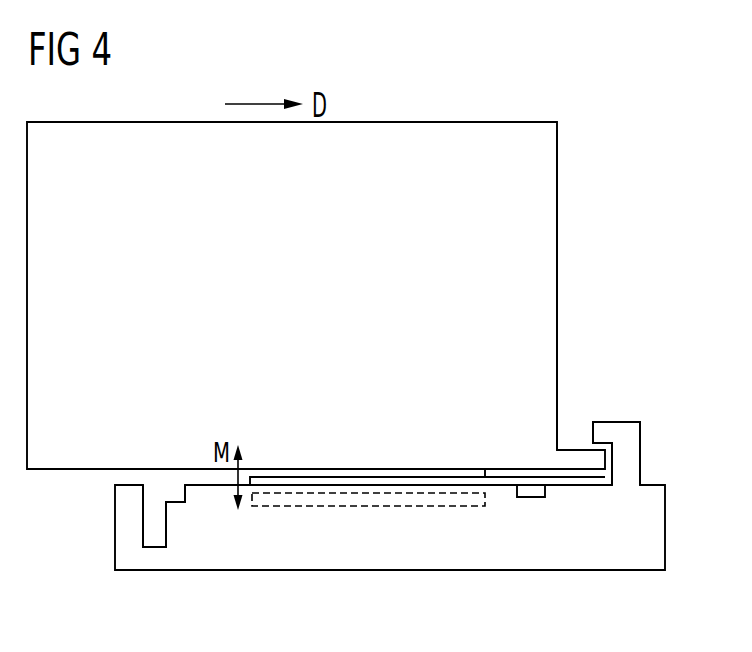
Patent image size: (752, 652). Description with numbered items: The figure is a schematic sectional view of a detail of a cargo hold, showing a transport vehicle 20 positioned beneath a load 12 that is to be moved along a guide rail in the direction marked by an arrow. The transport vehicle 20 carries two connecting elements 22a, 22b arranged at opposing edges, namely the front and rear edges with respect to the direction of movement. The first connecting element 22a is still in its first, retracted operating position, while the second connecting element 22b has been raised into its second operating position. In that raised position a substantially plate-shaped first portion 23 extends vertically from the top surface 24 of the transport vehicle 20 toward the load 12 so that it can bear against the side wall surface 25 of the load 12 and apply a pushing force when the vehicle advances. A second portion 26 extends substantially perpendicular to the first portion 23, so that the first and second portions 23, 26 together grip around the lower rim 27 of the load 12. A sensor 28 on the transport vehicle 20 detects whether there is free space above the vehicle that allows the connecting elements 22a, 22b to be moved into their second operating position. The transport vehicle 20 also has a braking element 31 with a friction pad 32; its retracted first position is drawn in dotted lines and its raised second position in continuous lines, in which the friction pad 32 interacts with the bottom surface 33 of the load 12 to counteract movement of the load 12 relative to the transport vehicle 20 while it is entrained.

The load 12 is at (532, 233).
The transport vehicle 20 is at (575, 555).
The first connecting element 22a is at (154, 548).
The second connecting element 22b is at (631, 409).
The first portion 23 is at (156, 528).
The top surface 24 is at (129, 483).
The side wall surface 25 is at (493, 307).
The second portion 26 is at (176, 500).
The lower rim 27 is at (597, 486).
The sensor 28 is at (532, 497).
The braking element 31 is at (496, 517).
The friction pad 32 is at (371, 476).
The bottom surface 33 is at (498, 475).